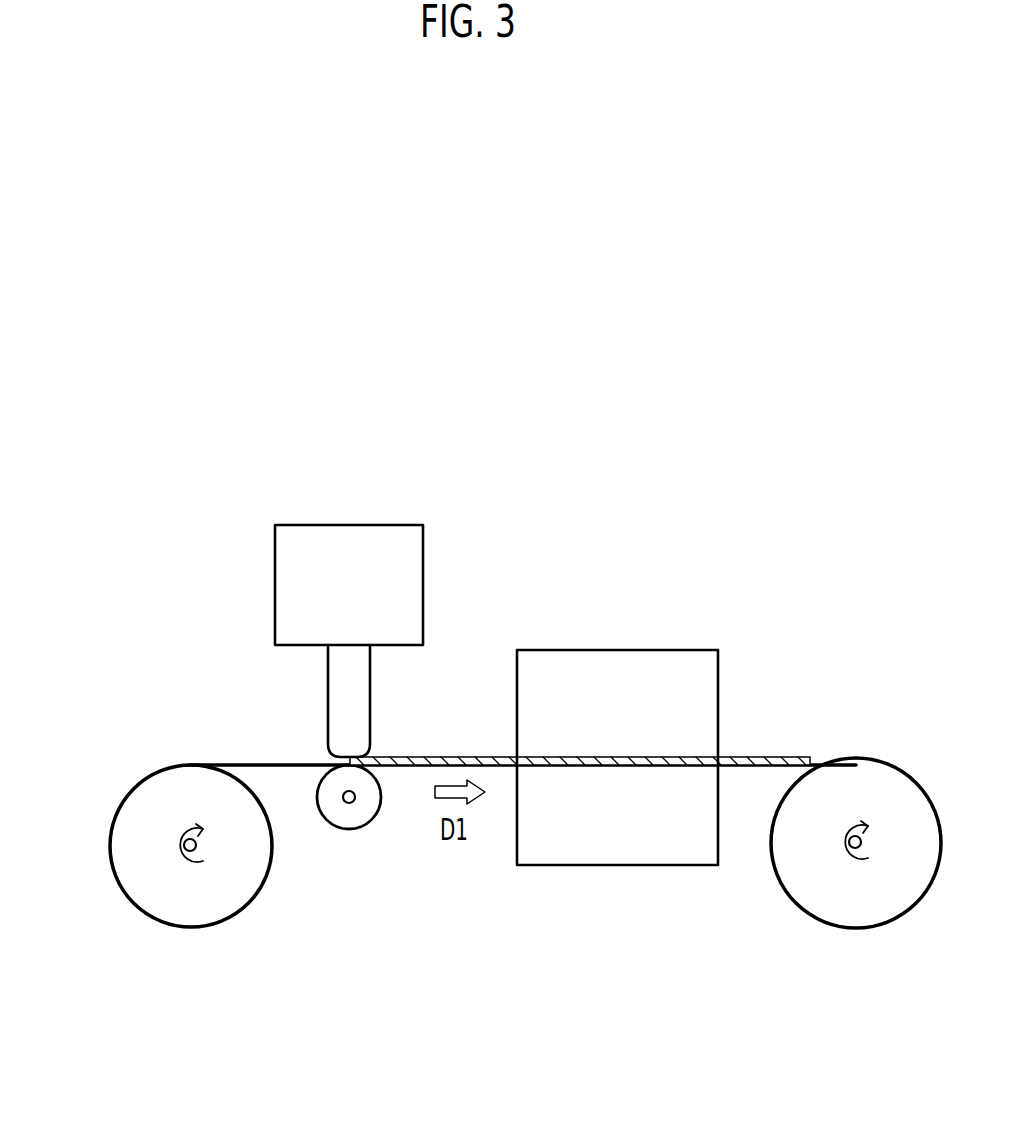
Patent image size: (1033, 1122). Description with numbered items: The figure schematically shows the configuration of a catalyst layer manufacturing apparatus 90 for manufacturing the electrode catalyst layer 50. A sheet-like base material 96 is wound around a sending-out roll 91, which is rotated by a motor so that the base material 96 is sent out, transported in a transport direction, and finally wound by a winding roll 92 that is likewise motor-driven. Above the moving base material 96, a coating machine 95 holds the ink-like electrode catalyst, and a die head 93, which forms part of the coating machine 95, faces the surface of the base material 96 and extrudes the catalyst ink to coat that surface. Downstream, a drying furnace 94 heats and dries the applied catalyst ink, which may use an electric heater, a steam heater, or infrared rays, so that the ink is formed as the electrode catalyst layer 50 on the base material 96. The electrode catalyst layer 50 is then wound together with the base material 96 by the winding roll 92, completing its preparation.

The electrode catalyst layer 50 is at (747, 757).
The catalyst layer manufacturing apparatus 90 is at (852, 628).
The sending-out roll 91 is at (132, 866).
The winding roll 92 is at (803, 888).
The die head 93 is at (372, 710).
The drying furnace 94 is at (637, 650).
The coating machine 95 is at (430, 606).
The base material 96 is at (272, 764).